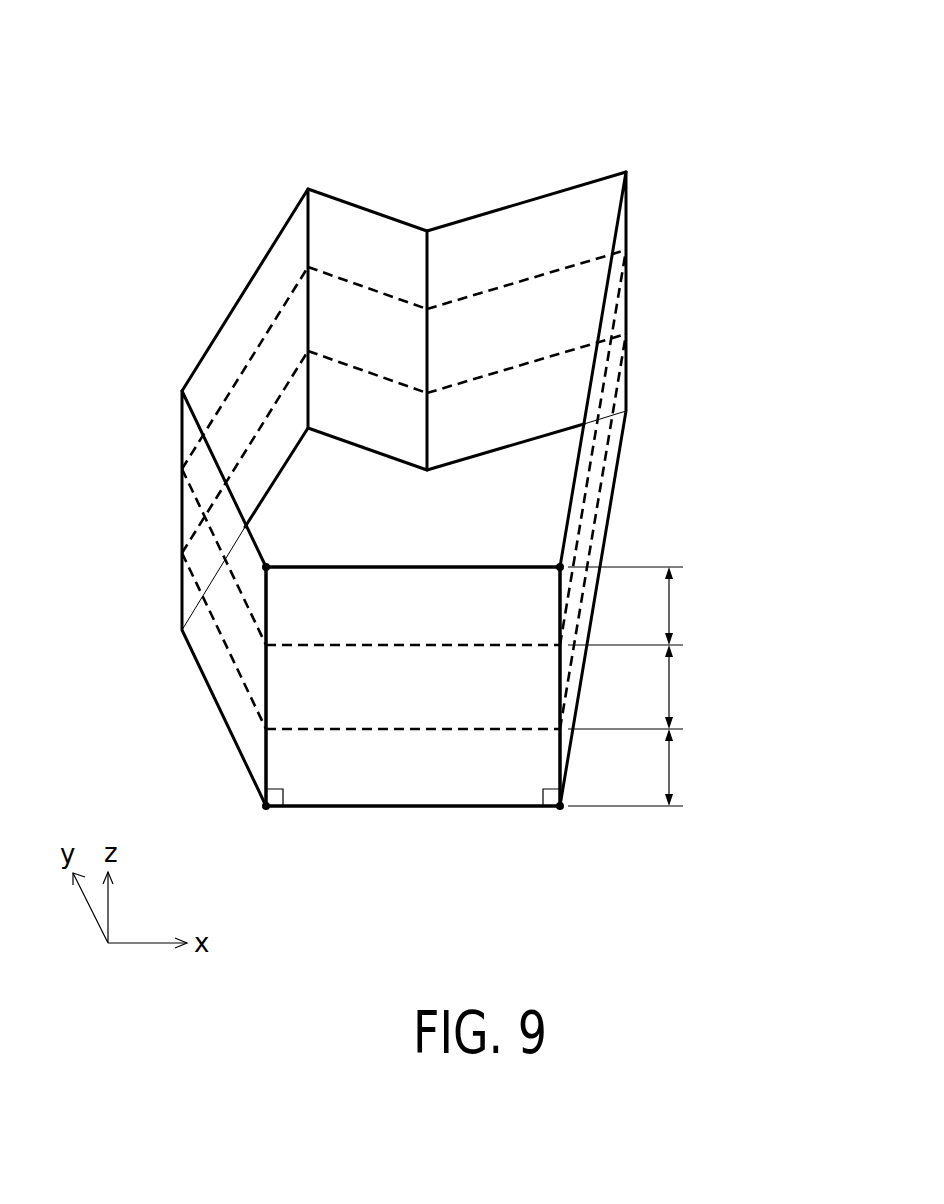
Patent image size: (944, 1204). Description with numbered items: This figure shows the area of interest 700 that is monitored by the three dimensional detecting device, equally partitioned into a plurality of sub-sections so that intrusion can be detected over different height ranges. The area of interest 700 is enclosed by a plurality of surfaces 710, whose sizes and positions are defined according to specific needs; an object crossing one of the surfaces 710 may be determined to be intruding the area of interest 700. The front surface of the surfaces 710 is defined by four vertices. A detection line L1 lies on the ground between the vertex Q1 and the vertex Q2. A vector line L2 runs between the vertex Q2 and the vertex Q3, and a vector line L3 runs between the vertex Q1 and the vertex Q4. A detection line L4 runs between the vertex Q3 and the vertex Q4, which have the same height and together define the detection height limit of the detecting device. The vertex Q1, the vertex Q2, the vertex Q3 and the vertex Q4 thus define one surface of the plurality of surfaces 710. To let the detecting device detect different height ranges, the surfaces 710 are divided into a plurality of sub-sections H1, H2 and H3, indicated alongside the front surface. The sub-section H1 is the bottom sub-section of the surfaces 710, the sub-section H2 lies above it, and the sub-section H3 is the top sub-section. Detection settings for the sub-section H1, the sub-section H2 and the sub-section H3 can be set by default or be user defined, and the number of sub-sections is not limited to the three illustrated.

The area of interest 700 is at (509, 448).
The surfaces 710 is at (353, 247).
The vertex Q1 is at (266, 809).
The vertex Q2 is at (560, 809).
The vertex Q3 is at (559, 565).
The vertex Q4 is at (268, 565).
The detection line L1 is at (427, 810).
The vector line L2 is at (558, 607).
The vector line L3 is at (264, 747).
The detection line L4 is at (401, 565).
The sub-section H1 is at (649, 767).
The sub-section H2 is at (648, 687).
The sub-section H3 is at (648, 606).